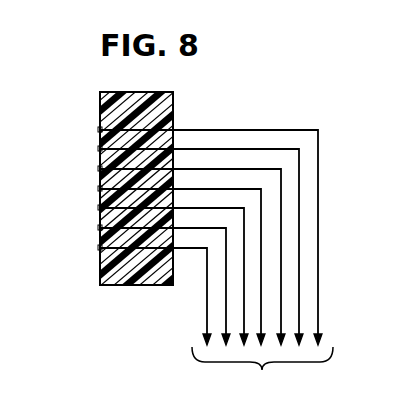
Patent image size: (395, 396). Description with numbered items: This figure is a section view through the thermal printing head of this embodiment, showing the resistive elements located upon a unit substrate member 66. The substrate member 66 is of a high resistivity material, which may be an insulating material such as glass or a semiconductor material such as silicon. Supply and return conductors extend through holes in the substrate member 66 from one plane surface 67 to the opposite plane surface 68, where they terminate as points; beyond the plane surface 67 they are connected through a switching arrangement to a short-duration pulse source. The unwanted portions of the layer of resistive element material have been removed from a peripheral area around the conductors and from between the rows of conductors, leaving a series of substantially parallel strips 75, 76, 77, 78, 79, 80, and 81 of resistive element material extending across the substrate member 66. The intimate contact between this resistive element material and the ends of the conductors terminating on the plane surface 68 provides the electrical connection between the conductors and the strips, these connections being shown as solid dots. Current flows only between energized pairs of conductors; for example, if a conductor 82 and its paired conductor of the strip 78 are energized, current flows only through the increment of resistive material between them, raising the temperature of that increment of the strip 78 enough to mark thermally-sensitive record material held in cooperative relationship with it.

The unit substrate member 66 is at (174, 97).
The plane surface 67 is at (175, 121).
The opposite plane surface 68 is at (99, 92).
The strip of resistive element material 75 is at (97, 129).
The strip of resistive element material 76 is at (97, 148).
The strip of resistive element material 77 is at (97, 168).
The strip of resistive element material 78 is at (97, 188).
The strip of resistive element material 79 is at (97, 208).
The strip of resistive element material 80 is at (97, 228).
The strip of resistive element material 81 is at (97, 247).
The conductor 82 is at (217, 189).